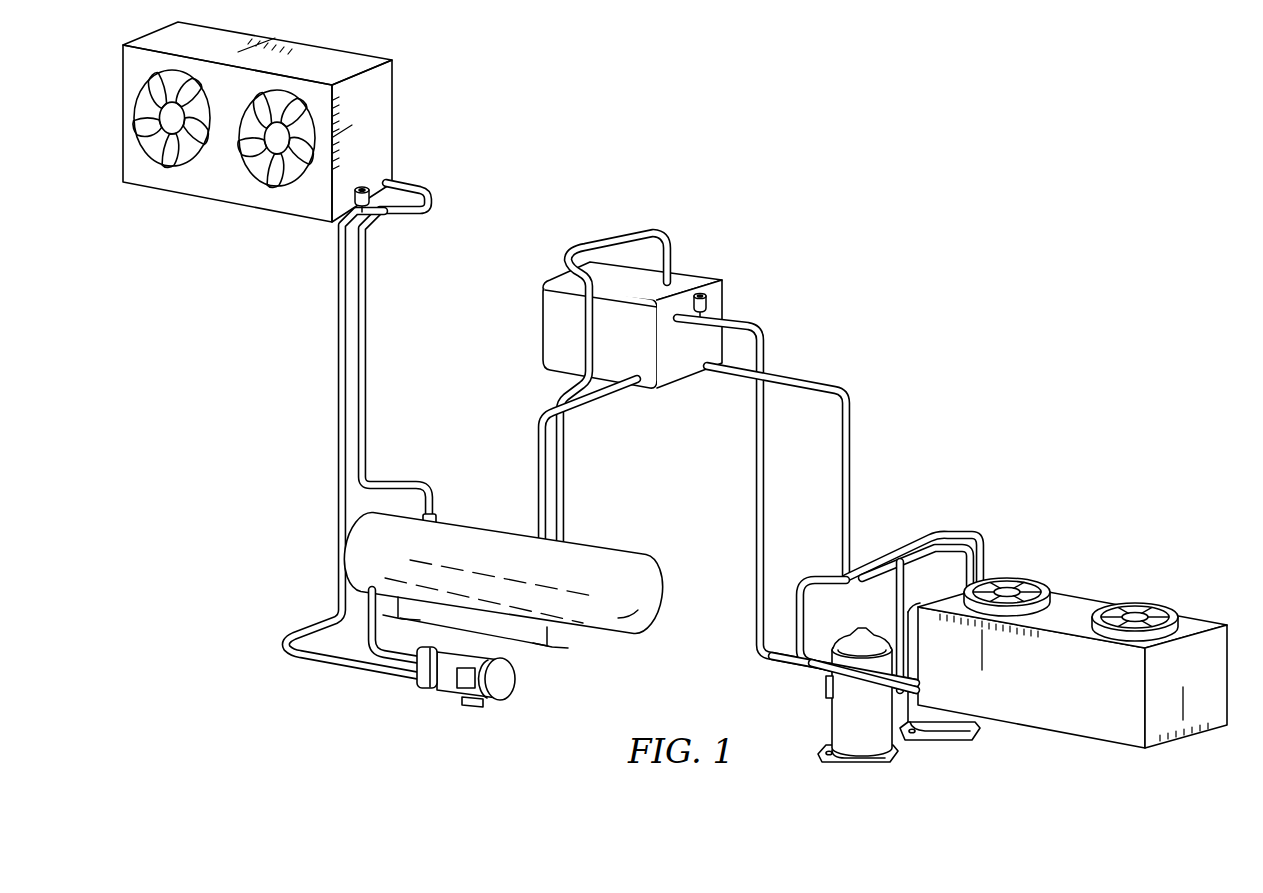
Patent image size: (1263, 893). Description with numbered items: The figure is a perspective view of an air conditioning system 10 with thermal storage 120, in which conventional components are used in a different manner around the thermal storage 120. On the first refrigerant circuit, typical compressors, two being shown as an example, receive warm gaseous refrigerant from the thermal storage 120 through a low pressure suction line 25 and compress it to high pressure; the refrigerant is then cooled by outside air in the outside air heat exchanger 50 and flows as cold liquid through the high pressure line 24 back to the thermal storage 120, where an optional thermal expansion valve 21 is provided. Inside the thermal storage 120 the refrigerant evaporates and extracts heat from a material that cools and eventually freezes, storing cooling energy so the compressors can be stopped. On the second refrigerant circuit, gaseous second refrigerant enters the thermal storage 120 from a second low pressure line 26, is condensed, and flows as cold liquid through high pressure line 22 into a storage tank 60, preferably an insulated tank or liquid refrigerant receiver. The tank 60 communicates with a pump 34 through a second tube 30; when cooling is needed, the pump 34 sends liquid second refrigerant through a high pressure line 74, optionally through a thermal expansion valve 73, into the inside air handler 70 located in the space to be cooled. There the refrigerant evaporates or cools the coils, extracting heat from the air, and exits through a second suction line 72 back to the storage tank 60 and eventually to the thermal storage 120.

The air conditioning system 10 is at (891, 230).
The thermal expansion valve 21 is at (706, 313).
The high pressure line 22 is at (568, 477).
The high pressure line 24 is at (764, 352).
The low pressure suction line 25 is at (850, 450).
The second low pressure line 26 is at (538, 429).
The second tube 30 is at (383, 622).
The pump 34 is at (512, 690).
The outside air heat exchanger 50 is at (1050, 722).
The storage tank 60 is at (633, 560).
The inside air handler 70 is at (395, 128).
The second suction line 72 is at (368, 315).
The thermal expansion valve 73 is at (350, 202).
The high pressure line 74 is at (340, 353).
The thermal storage 120 is at (683, 377).